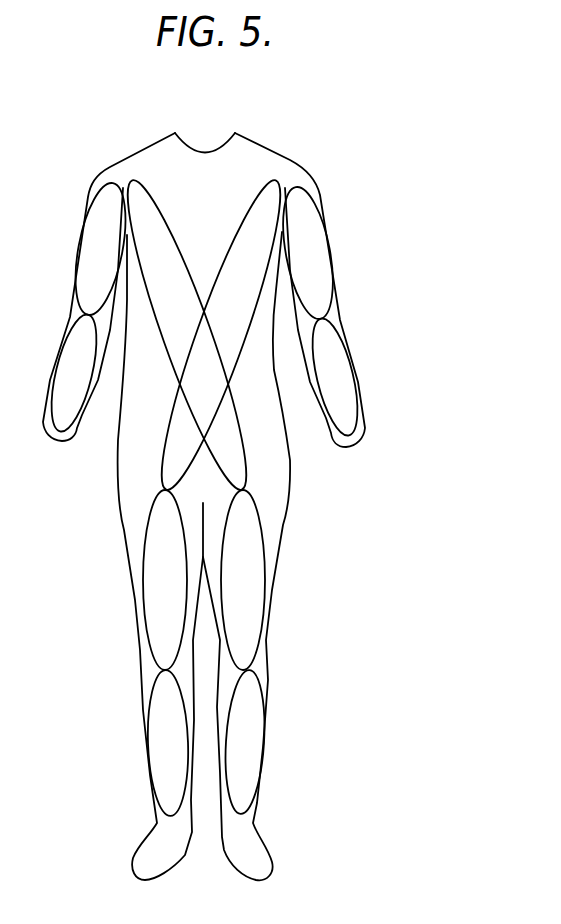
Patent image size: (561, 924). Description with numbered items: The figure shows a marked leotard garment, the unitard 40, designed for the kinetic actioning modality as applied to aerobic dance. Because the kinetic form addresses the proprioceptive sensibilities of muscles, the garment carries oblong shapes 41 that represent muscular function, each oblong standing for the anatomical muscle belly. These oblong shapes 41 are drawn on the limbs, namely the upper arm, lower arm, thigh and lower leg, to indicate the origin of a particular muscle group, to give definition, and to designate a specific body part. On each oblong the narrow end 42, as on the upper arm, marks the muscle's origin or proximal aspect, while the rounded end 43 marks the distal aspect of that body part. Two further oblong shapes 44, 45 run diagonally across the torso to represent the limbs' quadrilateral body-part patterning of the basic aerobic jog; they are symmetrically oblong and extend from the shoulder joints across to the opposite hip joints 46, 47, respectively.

The unitard 40 is at (369, 128).
The oblong shapes 41 is at (327, 257).
The narrow end 42 is at (295, 192).
The rounded end 43 is at (325, 320).
The oblong shape 44 is at (163, 340).
The oblong shape 45 is at (240, 343).
The hip joint 46 is at (163, 490).
The hip joint 47 is at (247, 490).